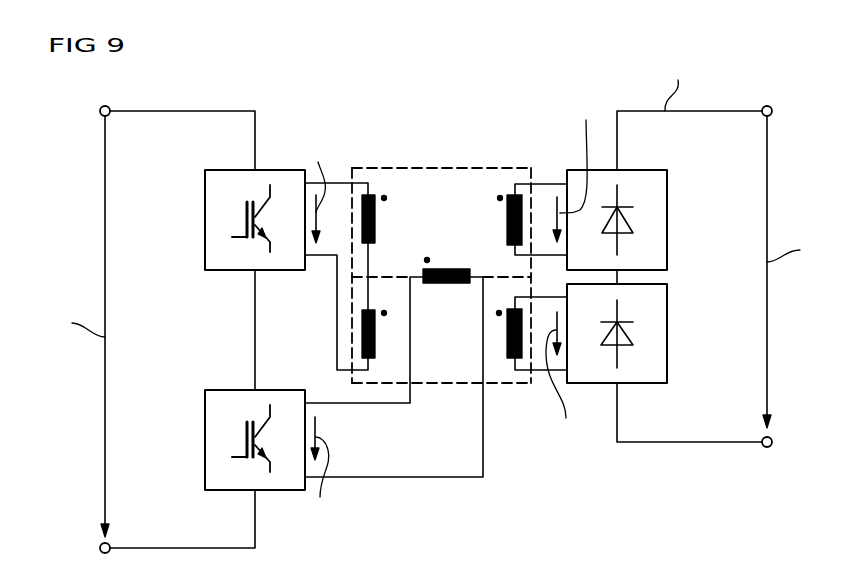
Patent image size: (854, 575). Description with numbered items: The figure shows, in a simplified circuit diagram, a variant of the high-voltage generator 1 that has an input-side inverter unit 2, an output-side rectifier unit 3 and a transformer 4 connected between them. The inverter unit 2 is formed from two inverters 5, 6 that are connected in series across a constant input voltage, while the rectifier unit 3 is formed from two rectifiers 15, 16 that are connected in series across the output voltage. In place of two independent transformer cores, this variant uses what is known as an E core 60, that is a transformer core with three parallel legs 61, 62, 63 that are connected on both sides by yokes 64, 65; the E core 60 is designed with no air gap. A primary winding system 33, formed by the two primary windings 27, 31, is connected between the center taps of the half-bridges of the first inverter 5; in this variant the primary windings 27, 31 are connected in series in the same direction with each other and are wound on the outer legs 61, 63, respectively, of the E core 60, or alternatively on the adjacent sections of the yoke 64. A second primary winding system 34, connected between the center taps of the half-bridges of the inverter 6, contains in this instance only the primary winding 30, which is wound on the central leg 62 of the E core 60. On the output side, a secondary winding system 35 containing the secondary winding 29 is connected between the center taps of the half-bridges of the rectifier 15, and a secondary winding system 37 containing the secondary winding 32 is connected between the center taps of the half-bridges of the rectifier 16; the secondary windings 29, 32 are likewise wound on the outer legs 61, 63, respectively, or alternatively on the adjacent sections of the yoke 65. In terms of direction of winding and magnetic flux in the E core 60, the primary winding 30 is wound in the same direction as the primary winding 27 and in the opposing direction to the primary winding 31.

The high-voltage generator 1 is at (737, 83).
The inverter unit 2 is at (219, 330).
The first inverter 5 is at (205, 220).
The inverter 6 is at (205, 440).
The rectifier unit 3 is at (658, 276).
The rectifier 15 is at (667, 218).
The rectifier 16 is at (667, 338).
The transformer 4 is at (439, 267).
The E core 60 is at (452, 160).
The outer leg 61 is at (418, 168).
The central leg 62 is at (398, 275).
The outer leg 63 is at (440, 383).
The yoke 64 is at (350, 173).
The yoke 65 is at (533, 175).
The primary winding 27 is at (370, 195).
The secondary winding 29 is at (510, 195).
The primary winding 30 is at (440, 268).
The primary winding 31 is at (372, 358).
The secondary winding 32 is at (510, 358).
The primary winding system 33 is at (322, 262).
The primary winding system 34 is at (322, 400).
The secondary winding system 35 is at (548, 182).
The secondary winding system 37 is at (543, 372).